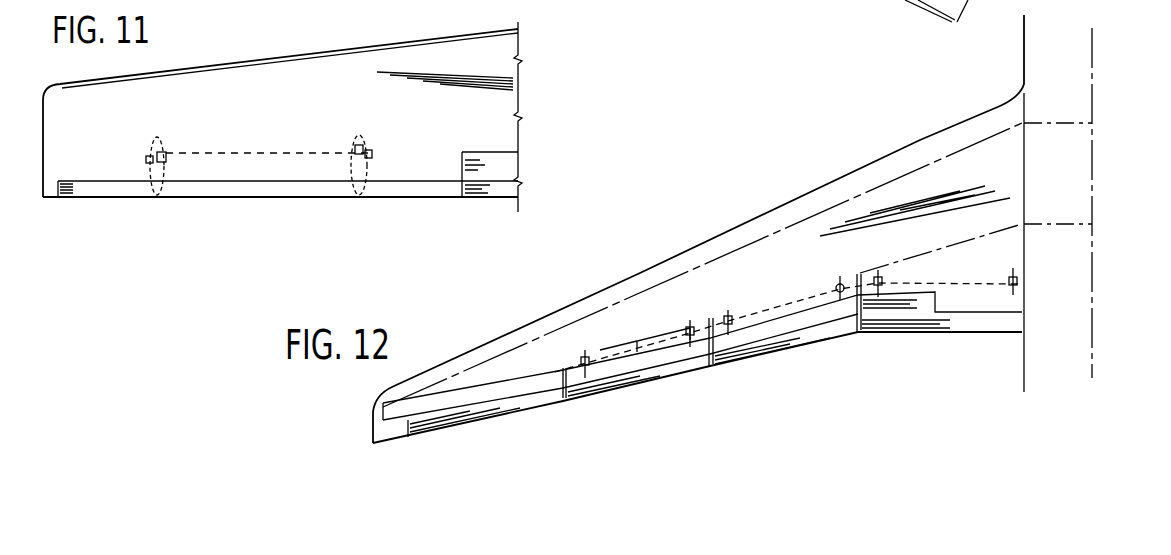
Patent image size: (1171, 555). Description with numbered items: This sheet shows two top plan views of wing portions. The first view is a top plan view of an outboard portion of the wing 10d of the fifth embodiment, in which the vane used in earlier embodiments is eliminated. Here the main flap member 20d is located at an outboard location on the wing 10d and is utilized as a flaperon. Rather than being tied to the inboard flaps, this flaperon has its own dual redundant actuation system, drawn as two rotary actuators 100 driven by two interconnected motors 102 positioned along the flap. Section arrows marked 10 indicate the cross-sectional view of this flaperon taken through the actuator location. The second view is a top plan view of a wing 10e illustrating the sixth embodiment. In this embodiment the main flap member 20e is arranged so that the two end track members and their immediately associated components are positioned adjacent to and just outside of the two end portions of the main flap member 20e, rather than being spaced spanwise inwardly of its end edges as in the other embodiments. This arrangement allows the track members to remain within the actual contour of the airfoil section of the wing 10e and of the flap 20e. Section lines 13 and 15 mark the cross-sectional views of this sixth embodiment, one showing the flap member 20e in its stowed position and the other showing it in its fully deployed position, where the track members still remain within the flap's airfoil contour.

In FIG. 11, the wing 10 is at (157, 108).
In FIG. 11, the wing 10d is at (371, 43).
In FIG. 11, the rotary actuator 100 is at (167, 150).
In FIG. 11, the motor 102 is at (147, 157).
In FIG. 11, the main flap member 20d is at (335, 192).
In FIG. 12, the wing 10e is at (702, 240).
In FIG. 12, the section line 13- 13 is at (722, 273).
In FIG. 12, the section line 15- 15 is at (728, 280).
In FIG. 12, the main flap member 20e is at (820, 333).